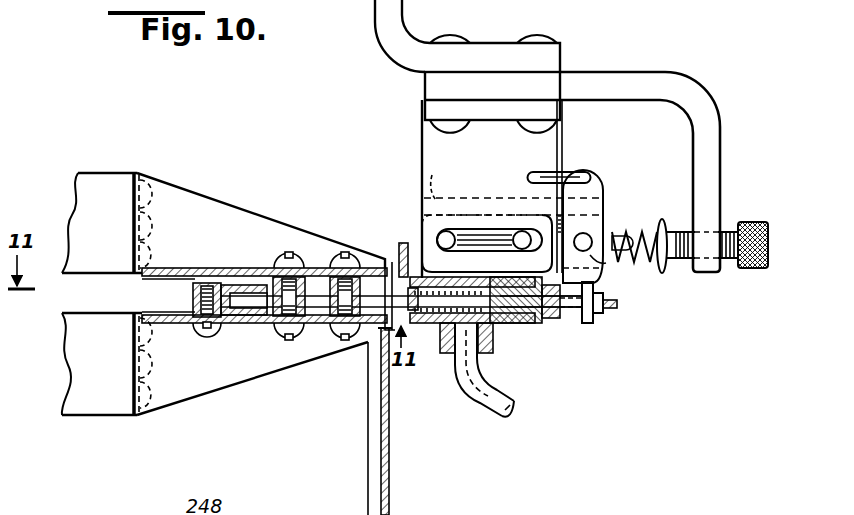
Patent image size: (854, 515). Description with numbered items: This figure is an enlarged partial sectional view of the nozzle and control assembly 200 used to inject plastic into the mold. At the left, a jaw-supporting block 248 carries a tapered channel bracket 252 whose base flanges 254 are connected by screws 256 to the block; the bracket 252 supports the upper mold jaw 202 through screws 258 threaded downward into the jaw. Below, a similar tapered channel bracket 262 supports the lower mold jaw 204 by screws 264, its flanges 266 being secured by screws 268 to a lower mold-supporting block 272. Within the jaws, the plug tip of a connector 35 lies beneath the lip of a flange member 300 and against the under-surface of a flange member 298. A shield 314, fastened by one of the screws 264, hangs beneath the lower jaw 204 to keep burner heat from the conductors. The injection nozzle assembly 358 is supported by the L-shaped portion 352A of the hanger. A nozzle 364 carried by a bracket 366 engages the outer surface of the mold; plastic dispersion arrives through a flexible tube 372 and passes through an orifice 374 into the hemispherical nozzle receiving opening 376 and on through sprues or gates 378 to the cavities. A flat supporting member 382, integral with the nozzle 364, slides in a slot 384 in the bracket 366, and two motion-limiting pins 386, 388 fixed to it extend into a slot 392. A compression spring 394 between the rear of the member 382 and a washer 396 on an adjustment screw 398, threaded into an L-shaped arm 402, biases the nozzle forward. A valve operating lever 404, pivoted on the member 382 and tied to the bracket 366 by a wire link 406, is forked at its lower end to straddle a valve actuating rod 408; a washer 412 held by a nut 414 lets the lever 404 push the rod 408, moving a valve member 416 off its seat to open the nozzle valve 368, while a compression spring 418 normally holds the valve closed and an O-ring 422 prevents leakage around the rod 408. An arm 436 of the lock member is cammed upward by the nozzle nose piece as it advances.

The heat exchanger assembly 200 is at (215, 165).
The jaw-supporting block 248 is at (98, 170).
The tapered channel bracket 252 is at (230, 212).
The flanges 254 is at (133, 222).
The screws 256 is at (150, 219).
The screws 258 is at (292, 266).
The tapered channel bracket 262 is at (222, 383).
The screws 264 is at (207, 330).
The flanges 266 is at (133, 357).
The screws 268 is at (150, 373).
The lower mold-supporting block 272 is at (82, 405).
The flange member 298 is at (236, 270).
The flange member 300 is at (193, 298).
The connector 35 is at (250, 323).
The upper mold jaw 202 is at (256, 283).
The lower mold jaw 204 is at (268, 330).
The shield 314 is at (390, 500).
The L-shaped portion 352A is at (400, 20).
The injection nozzle assembly 358 is at (508, 344).
The nozzle 364 is at (540, 318).
The bracket 366 is at (424, 145).
The nozzle valve 368 is at (458, 411).
The flexible tube 372 is at (500, 420).
The orifice 374 is at (388, 266).
The nozzle receiving opening 376 is at (362, 345).
The sprues or gates 378 is at (352, 262).
The flat supporting member 382 is at (600, 262).
The slot 384 is at (423, 168).
The motion-limiting pin 386 is at (446, 231).
The motion-limiting pin 388 is at (520, 231).
The slot 392 is at (455, 233).
The compression spring 394 is at (638, 232).
The washer 396 is at (666, 222).
The adjustment screw 398 is at (750, 222).
The L-shaped arm 402 is at (638, 80).
The valve operating lever 404 is at (600, 185).
The wire link 406 is at (576, 178).
The valve actuating rod 408 is at (617, 304).
The washer 412 is at (590, 325).
The nut 414 is at (603, 312).
The valve member 416 is at (414, 325).
The compression spring 418 is at (456, 262).
The O-ring 422 is at (513, 262).
The arm 436 is at (405, 243).